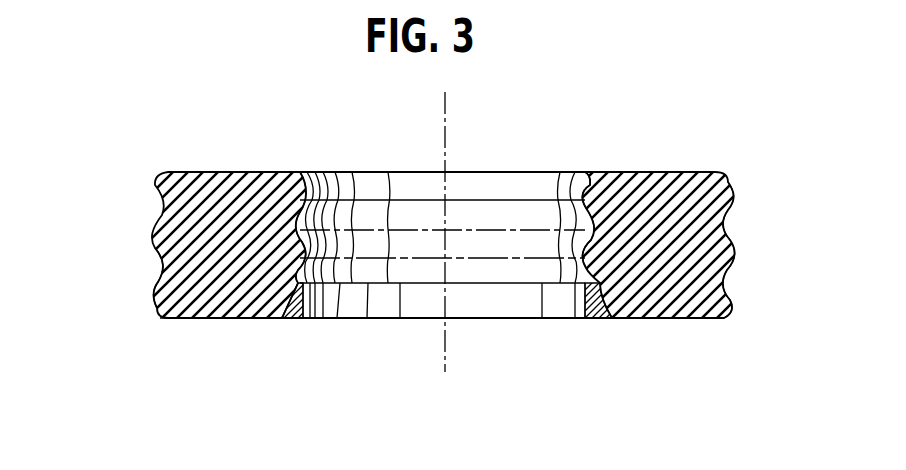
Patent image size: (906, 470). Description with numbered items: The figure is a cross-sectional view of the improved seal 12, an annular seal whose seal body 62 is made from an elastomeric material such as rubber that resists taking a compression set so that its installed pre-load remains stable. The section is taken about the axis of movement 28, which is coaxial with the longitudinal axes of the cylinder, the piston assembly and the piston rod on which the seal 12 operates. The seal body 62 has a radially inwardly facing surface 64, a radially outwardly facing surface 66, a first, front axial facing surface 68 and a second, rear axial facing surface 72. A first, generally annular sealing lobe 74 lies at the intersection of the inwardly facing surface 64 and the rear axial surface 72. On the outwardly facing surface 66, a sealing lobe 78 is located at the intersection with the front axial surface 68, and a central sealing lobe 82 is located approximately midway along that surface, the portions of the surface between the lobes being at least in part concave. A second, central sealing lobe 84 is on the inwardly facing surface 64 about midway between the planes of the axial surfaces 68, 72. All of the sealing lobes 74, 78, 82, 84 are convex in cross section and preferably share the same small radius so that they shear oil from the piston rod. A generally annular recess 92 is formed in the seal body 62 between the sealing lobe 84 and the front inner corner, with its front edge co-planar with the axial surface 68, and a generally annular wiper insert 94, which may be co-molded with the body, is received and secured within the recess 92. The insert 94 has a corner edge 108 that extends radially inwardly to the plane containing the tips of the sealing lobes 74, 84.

The seal 12 is at (190, 256).
The axis of movement 28 is at (445, 150).
The seal body 62 is at (196, 192).
The radially inwardly facing surface 64 is at (583, 233).
The radially outwardly facing surface 66 is at (164, 280).
The first, front axial facing surface 68 is at (270, 318).
The second, rear axial facing surface 72 is at (272, 172).
The first sealing lobe 74 is at (588, 178).
The sealing lobe 78 is at (157, 312).
The central sealing lobe 82 is at (742, 244).
The second central sealing lobe 84 is at (342, 172).
The recess 92 is at (610, 318).
The wiper insert 94 is at (302, 330).
The corner edge 108 is at (327, 296).